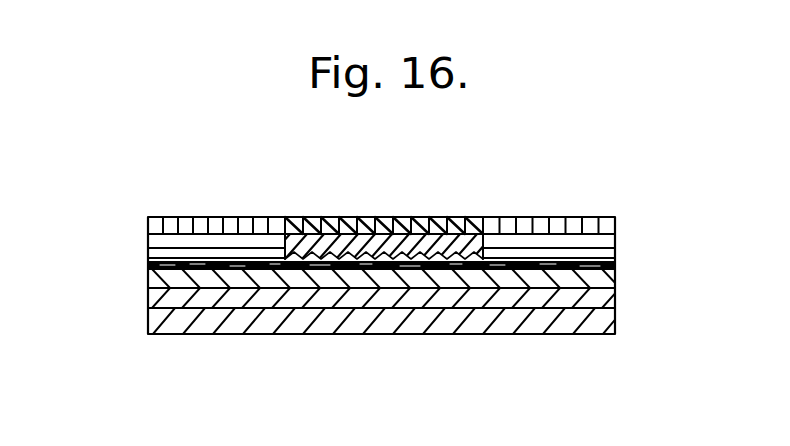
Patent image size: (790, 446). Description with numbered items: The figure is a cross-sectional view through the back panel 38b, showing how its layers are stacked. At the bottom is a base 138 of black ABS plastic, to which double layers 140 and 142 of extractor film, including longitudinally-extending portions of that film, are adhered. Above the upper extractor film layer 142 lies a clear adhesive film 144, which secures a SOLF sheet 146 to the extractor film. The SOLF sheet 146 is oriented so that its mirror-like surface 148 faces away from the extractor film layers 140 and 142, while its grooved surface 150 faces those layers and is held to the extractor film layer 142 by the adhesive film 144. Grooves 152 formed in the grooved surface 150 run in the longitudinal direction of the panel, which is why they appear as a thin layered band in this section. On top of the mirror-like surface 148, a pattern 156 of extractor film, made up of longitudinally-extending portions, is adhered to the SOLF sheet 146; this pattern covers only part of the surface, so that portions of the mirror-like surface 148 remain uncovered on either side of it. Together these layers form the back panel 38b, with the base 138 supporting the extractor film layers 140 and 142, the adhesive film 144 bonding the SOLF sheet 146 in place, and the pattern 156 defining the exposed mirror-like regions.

The back panel 38b is at (560, 355).
The base 138 is at (222, 316).
The extractor film layer 140 is at (585, 303).
The extractor film layer 142 is at (597, 282).
The clear adhesive film 144 is at (615, 227).
The SOLF sheet 146 is at (140, 240).
The mirror-like surface 148 is at (207, 226).
The grooved surface 150 is at (140, 256).
The grooves 152 is at (282, 247).
The pattern of extractor film 156 is at (293, 222).